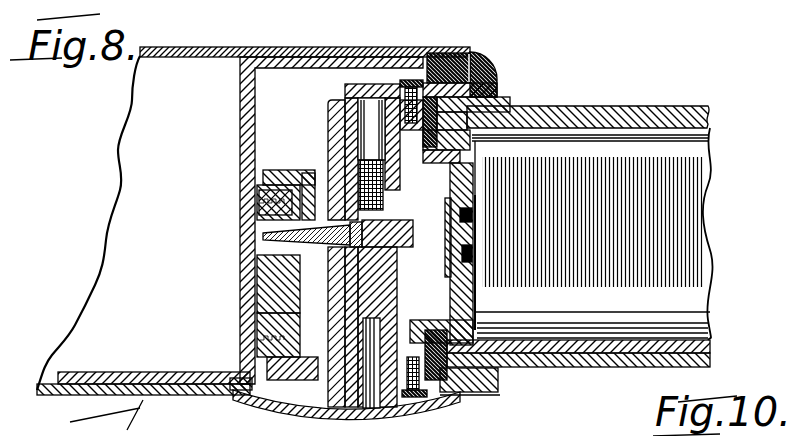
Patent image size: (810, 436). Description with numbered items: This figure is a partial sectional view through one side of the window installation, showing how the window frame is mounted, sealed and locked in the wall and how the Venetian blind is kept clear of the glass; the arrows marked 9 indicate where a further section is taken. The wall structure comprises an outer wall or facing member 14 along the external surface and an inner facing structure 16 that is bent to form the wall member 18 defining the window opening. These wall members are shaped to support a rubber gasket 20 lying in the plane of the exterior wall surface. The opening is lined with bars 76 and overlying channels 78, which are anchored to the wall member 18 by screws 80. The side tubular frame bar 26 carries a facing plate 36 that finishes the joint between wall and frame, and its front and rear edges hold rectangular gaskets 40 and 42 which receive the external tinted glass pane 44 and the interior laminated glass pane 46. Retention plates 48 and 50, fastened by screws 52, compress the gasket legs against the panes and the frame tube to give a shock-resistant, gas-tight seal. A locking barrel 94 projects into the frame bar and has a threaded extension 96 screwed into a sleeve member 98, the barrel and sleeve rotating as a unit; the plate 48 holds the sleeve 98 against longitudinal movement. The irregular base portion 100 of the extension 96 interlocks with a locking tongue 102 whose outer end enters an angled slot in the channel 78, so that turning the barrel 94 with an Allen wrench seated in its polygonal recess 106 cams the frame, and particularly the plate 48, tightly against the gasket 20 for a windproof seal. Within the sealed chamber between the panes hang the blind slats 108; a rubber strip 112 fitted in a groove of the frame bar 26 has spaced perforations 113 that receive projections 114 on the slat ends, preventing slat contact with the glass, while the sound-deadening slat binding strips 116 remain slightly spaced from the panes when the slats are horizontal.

The wall or facing member 14 is at (184, 57).
The facing structure 16 is at (120, 370).
The wall member 18 is at (240, 157).
The gasket 20 is at (480, 66).
The tubular frame bar 26 is at (330, 128).
The facing plate 36 is at (307, 410).
The gasket 40 is at (498, 100).
The gasket 42 is at (498, 371).
The glass window pane 44 is at (618, 108).
The glass window pane 46 is at (716, 355).
The retention plate 48 is at (360, 84).
The retention plate 50 is at (481, 392).
The screws 52 is at (408, 80).
The bars 76 is at (257, 296).
The channels 78 is at (257, 314).
The screws 80 is at (255, 208).
The locking barrel 94 is at (380, 295).
The threaded extension 96 is at (397, 187).
The sleeve member 98 is at (352, 150).
The base portion 100 is at (401, 251).
The locking tongue 102 is at (405, 224).
The polygonally formed recess 106 is at (378, 402).
The slats 108 is at (685, 195).
The rubber strip 112 is at (468, 216).
The perforations 113 is at (472, 230).
The projections 114 is at (508, 289).
The slat binding strips 116 is at (684, 147).
The section line 9 is at (203, 232).